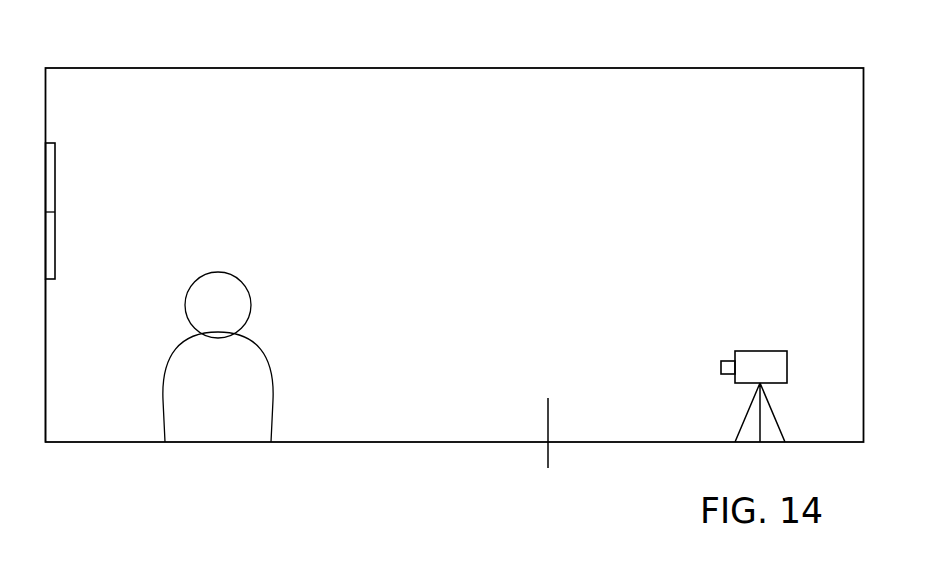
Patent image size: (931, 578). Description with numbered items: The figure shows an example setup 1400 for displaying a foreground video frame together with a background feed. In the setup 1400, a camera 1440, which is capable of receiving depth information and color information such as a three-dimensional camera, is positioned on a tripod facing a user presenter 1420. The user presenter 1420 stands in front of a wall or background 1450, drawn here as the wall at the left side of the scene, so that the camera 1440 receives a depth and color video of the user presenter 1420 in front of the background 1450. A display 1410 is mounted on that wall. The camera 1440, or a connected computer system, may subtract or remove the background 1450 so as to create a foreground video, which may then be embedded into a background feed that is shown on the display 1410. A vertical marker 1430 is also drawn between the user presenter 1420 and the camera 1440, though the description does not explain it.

The setup 1400 is at (819, 107).
The display 1410 is at (49, 143).
The user presenter 1420 is at (233, 428).
The marker pole 1430 is at (547, 420).
The camera 1440 is at (763, 351).
The background 1450 is at (46, 363).